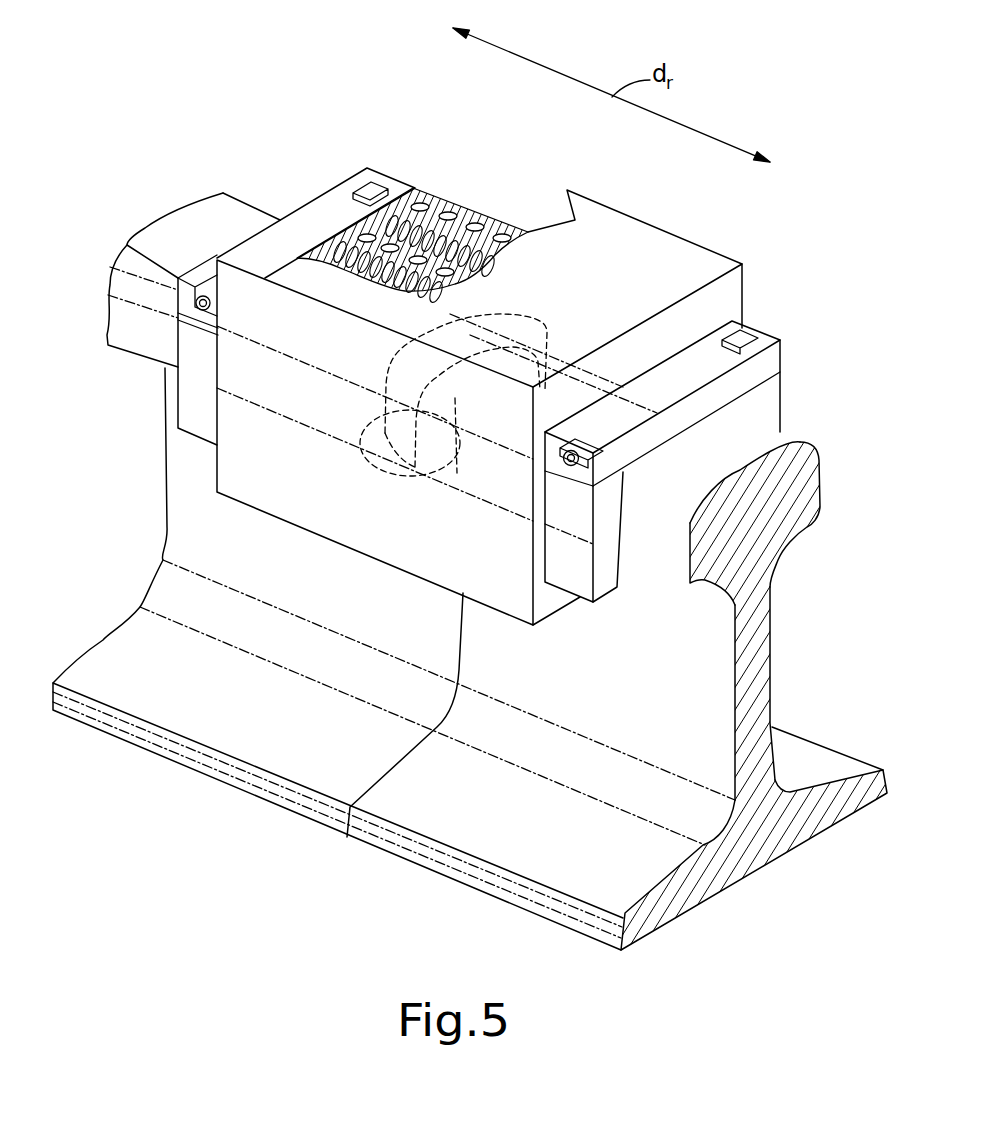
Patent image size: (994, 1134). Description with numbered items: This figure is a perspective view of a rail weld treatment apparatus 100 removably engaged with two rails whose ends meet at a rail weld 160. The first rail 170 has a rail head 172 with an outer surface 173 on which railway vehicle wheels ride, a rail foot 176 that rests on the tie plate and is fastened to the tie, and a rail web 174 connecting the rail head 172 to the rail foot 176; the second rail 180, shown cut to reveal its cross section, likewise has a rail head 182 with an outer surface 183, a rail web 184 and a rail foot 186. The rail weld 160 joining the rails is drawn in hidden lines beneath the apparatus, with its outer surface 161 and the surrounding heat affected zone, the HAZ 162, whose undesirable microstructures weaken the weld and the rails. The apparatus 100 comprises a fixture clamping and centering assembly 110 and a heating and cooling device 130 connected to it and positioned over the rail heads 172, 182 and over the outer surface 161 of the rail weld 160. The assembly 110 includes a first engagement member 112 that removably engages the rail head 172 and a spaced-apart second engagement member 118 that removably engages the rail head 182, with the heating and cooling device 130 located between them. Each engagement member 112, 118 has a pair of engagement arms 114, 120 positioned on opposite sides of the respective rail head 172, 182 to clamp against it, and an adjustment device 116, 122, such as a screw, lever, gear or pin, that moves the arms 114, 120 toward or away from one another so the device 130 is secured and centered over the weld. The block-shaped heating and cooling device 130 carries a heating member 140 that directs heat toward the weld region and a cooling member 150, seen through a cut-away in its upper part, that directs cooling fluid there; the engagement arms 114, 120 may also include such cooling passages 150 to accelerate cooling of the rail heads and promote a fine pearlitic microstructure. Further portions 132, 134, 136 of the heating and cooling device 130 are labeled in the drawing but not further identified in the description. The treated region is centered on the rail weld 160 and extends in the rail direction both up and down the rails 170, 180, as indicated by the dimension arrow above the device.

The rail weld treatment apparatus 100 is at (752, 182).
The fixture clamping and centering assembly 110 is at (203, 178).
The first engagement member 112 is at (337, 192).
The engagement arm 114 is at (195, 390).
The adjustment device 116 is at (208, 290).
The second engagement member 118 is at (767, 342).
The engagement arm 120 is at (773, 403).
The adjustment device 122 is at (572, 467).
The heating and cooling device 130 is at (648, 222).
The top surface of housing 132 is at (577, 220).
The rear surface of housing 134 is at (672, 262).
The front surface of housing 136 is at (502, 590).
The heating member 140 is at (442, 200).
The cooling member 150 is at (497, 210).
The rail weld 160 is at (387, 427).
The outer surface of the rail weld 161 is at (460, 468).
The HAZ 162 is at (430, 430).
The first rail 170 is at (307, 586).
The rail head 172 is at (153, 250).
The outer surface 173 is at (232, 213).
The rail web 174 is at (173, 460).
The rail foot 176 is at (270, 745).
The second rail 180 is at (647, 704).
The rail head 182 is at (793, 488).
The outer surface 183 is at (797, 433).
The rail web 184 is at (757, 650).
The rail foot 186 is at (752, 853).